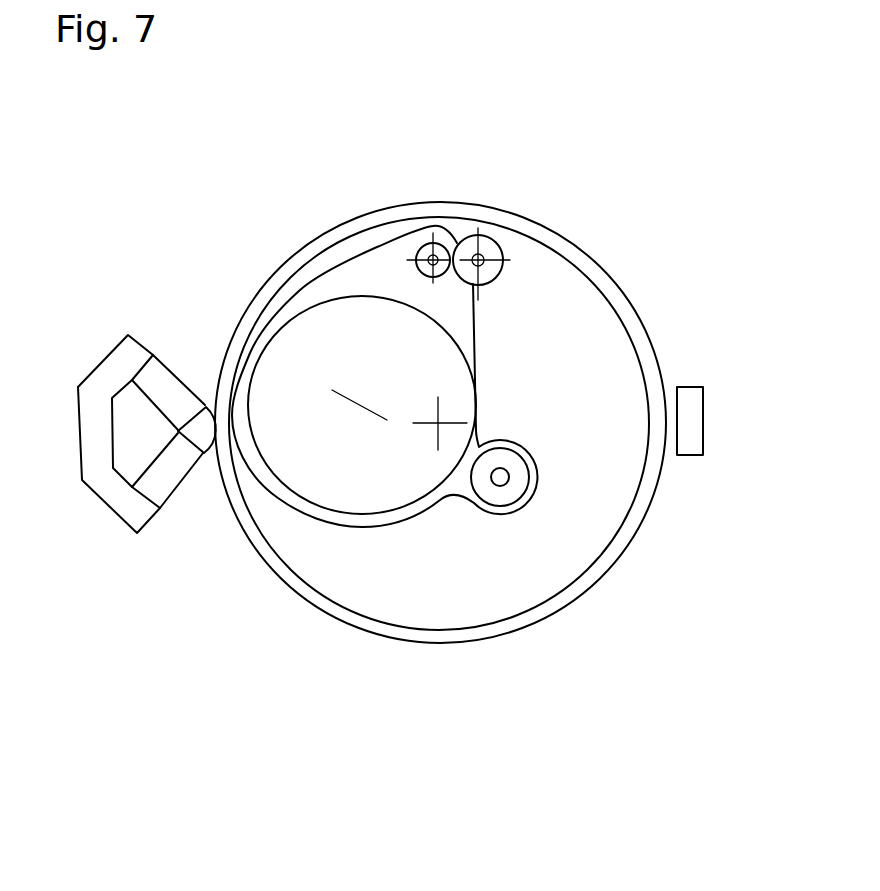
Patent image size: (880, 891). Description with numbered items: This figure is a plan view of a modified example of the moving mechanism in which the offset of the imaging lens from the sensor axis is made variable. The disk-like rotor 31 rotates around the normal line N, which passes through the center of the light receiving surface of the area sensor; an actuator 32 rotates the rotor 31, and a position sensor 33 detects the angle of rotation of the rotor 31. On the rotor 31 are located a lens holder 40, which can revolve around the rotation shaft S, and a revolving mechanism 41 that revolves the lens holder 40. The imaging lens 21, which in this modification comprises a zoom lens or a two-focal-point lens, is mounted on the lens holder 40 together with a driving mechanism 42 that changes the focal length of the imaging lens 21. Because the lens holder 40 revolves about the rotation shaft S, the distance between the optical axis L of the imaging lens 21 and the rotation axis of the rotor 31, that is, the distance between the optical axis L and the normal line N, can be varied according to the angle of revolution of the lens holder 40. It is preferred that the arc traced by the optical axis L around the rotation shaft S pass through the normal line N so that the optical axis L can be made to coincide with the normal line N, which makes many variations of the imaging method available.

The imaging lens 21 is at (279, 362).
The rotor 31 is at (540, 620).
The actuator 32 is at (127, 522).
The position sensor 33 is at (703, 420).
The lens holder 40 is at (380, 268).
The revolving mechanism 41 is at (487, 242).
The driving mechanism 42 is at (482, 487).
The rotation shaft S is at (443, 242).
The optical axis L is at (377, 377).
The normal line N is at (438, 428).